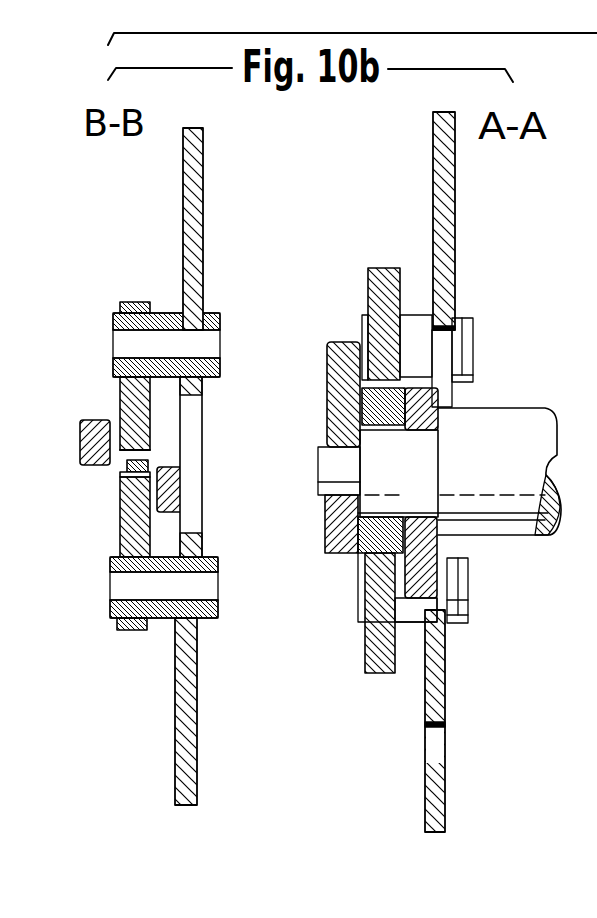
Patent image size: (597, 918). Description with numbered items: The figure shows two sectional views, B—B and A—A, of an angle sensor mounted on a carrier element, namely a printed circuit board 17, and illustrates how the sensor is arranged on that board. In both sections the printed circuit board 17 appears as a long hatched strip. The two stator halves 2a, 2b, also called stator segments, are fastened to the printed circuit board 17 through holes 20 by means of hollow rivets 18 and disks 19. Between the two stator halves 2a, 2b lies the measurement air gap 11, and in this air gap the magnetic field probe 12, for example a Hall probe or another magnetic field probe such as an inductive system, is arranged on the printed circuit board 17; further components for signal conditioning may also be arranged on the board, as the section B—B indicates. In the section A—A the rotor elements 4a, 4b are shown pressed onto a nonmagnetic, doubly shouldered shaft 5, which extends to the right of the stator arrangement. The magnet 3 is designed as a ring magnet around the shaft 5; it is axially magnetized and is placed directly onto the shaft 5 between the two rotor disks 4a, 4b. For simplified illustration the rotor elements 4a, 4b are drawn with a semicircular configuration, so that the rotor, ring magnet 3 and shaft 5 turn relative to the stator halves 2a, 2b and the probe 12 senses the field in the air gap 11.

The stator half 2a is at (128, 392).
The stator half 2b is at (128, 548).
The magnet 3 is at (338, 420).
The rotor element 4a is at (87, 445).
The rotor element 4b is at (170, 488).
The shaft 5 is at (517, 422).
The air gap 11 is at (122, 467).
The magnetic field probe 12 is at (147, 462).
The printed circuit board 17 is at (198, 163).
The hollow rivet 18 is at (166, 313).
The disk 19 is at (206, 314).
The hole 20 is at (131, 620).